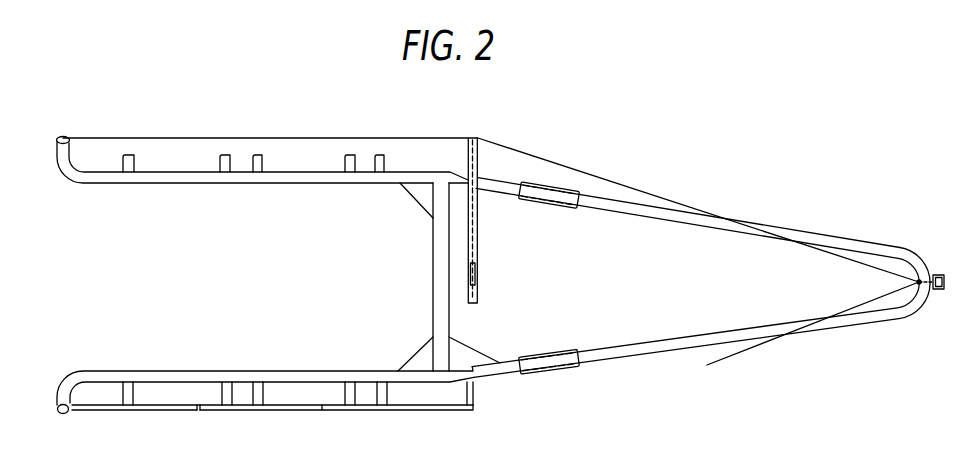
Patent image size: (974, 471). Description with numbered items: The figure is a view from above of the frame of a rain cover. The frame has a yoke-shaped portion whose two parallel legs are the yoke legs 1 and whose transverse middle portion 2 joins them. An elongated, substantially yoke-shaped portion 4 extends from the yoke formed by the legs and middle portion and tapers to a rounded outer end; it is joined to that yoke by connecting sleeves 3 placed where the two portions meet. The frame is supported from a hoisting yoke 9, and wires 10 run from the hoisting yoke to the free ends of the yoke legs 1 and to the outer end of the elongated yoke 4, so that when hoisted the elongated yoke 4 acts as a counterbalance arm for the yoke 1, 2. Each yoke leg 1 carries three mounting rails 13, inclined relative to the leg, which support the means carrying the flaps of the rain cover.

The yoke legs 1 is at (147, 172).
The middle portion 2 is at (432, 257).
The connecting sleeves 3 is at (530, 203).
The elongated yoke-shaped portion 4 is at (850, 245).
The hoisting yoke 9 is at (480, 293).
The wires 10 is at (290, 137).
The mounting rails 13 is at (140, 409).